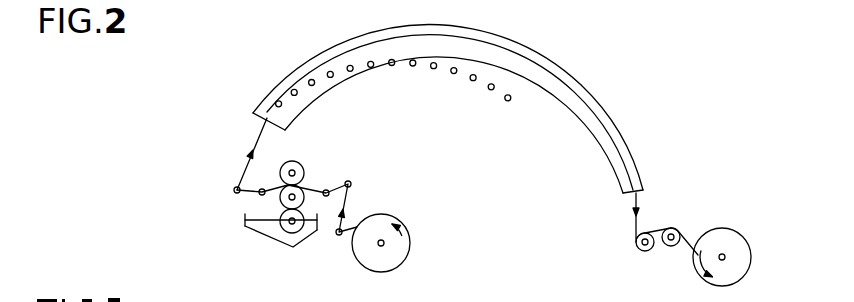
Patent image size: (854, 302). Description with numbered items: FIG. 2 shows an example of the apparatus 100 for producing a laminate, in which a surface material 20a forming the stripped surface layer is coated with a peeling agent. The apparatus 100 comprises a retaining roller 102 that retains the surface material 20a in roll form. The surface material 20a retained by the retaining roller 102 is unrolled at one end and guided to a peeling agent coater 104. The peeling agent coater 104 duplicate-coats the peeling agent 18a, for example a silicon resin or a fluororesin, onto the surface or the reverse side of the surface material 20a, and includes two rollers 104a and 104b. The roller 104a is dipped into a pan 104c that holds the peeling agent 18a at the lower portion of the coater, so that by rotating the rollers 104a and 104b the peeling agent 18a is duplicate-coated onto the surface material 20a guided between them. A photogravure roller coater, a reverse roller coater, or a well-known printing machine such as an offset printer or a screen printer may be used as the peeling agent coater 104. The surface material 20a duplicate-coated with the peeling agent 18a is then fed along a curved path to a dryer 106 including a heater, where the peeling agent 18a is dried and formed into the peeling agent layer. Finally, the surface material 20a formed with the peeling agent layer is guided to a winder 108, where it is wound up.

The apparatus 100 is at (662, 76).
The retaining roller 102 is at (393, 257).
The peeling agent coater 104 is at (238, 254).
The roller 104a is at (287, 225).
The roller 104b is at (303, 181).
The pan 104c is at (245, 220).
The peeling agent 18a is at (255, 228).
The surface material 20a is at (347, 198).
The dryer 106 is at (488, 35).
The winder 108 is at (718, 238).